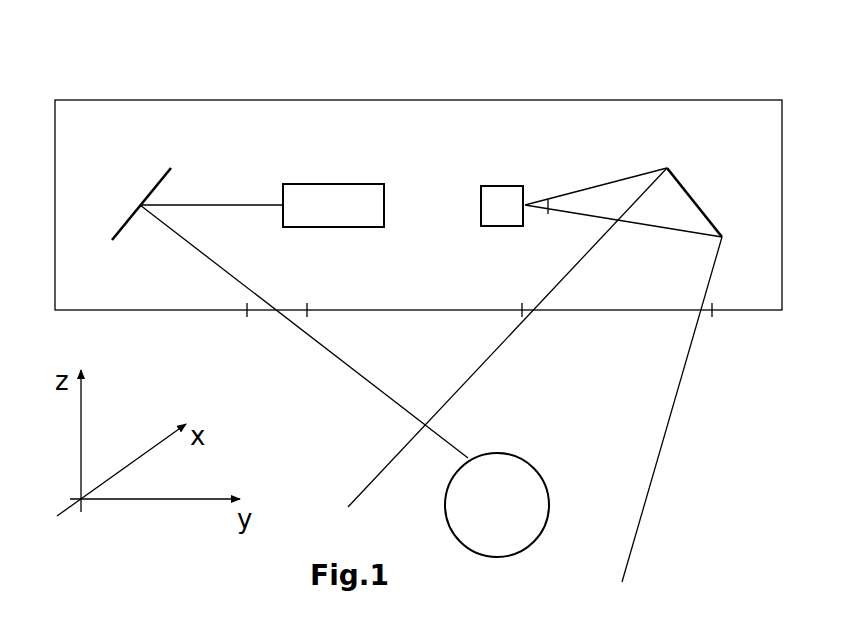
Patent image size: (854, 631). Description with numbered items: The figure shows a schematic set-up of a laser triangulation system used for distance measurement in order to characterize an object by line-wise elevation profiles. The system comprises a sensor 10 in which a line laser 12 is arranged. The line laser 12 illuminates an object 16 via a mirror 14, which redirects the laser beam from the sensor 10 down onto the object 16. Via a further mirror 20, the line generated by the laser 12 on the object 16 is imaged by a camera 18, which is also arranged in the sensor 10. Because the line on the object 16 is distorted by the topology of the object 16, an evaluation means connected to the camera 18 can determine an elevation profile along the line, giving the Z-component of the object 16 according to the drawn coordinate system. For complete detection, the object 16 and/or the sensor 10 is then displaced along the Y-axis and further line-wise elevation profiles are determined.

The sensor 10 is at (112, 100).
The line laser 12 is at (310, 192).
The mirror 14 is at (163, 172).
The object 16 is at (523, 464).
The camera 18 is at (495, 200).
The further mirror 20 is at (685, 186).